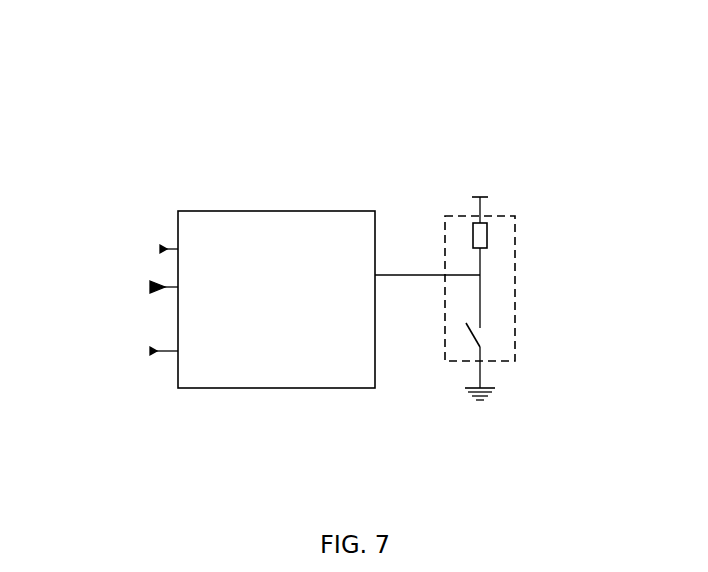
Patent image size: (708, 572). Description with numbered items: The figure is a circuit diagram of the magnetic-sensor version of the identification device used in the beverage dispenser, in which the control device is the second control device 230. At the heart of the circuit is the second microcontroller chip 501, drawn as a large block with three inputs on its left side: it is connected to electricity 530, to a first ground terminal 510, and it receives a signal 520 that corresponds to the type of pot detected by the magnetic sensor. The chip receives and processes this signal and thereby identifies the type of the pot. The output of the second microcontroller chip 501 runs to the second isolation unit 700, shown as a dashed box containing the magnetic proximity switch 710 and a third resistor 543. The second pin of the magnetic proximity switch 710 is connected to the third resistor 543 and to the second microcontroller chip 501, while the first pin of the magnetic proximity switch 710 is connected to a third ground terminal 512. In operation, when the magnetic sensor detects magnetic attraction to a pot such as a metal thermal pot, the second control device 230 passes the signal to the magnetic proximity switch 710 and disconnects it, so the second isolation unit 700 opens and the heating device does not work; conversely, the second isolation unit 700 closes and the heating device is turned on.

The second control device 230 is at (368, 158).
The second microcontroller chip 501 is at (265, 284).
The electricity 530 is at (116, 234).
The first ground terminal 510 is at (112, 271).
The signal 520 is at (112, 337).
The second isolation unit 700 is at (553, 288).
The third resistor 543 is at (551, 231).
The magnetic proximity switch 710 is at (546, 335).
The third ground terminal 512 is at (534, 422).